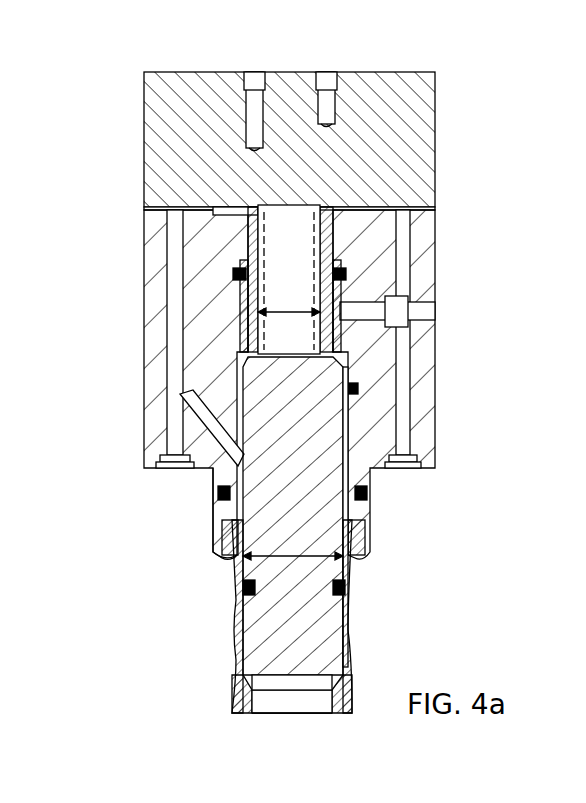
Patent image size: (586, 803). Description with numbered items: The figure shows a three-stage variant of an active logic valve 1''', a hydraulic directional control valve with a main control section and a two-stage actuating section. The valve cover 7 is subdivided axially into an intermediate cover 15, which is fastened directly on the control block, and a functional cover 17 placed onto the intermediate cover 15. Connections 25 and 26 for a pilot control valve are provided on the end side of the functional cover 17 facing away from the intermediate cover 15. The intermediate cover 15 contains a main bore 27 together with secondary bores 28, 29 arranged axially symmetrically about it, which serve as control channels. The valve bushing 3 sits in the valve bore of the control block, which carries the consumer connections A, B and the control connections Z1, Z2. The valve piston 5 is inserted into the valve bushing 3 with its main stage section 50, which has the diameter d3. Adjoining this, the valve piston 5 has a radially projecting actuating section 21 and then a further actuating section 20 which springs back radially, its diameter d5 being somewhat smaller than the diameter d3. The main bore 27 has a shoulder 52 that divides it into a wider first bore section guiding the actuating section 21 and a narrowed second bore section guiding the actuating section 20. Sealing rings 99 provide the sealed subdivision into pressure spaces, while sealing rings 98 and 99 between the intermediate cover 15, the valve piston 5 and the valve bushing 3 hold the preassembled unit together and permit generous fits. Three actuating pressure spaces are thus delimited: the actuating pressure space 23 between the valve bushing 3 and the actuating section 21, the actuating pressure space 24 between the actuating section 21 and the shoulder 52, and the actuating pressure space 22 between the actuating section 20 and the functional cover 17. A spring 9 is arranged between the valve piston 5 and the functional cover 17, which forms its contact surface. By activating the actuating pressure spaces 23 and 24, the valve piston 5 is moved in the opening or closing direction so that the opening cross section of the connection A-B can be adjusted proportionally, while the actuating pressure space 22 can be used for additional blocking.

The valve cover 7 is at (118, 191).
The active logic valve 1''' is at (542, 183).
The functional cover 17 is at (416, 106).
The connection 25 is at (252, 72).
The connection 26 is at (328, 72).
The actuating pressure space 22 is at (440, 212).
The intermediate cover 15 is at (425, 246).
The secondary bore 28 is at (175, 372).
The secondary bore 29 is at (432, 356).
The main bore 27 is at (235, 325).
The actuating section 20 is at (395, 298).
The actuating pressure space 24 is at (425, 326).
The shoulder 52 is at (270, 300).
The spring 9 is at (322, 241).
The diameter d5 is at (290, 305).
The actuating section 21 is at (378, 418).
The sealing ring 99 is at (232, 272).
The control connection Z1 is at (178, 470).
The control connection Z2 is at (415, 474).
The actuating pressure space 23 is at (365, 492).
The valve bushing 3 is at (342, 590).
The valve piston 5 is at (352, 640).
The main stage section 50 is at (213, 575).
The sealing ring 98 is at (243, 598).
The diameter d3 is at (343, 553).
The consumer connection B is at (320, 652).
The consumer connection A is at (288, 704).